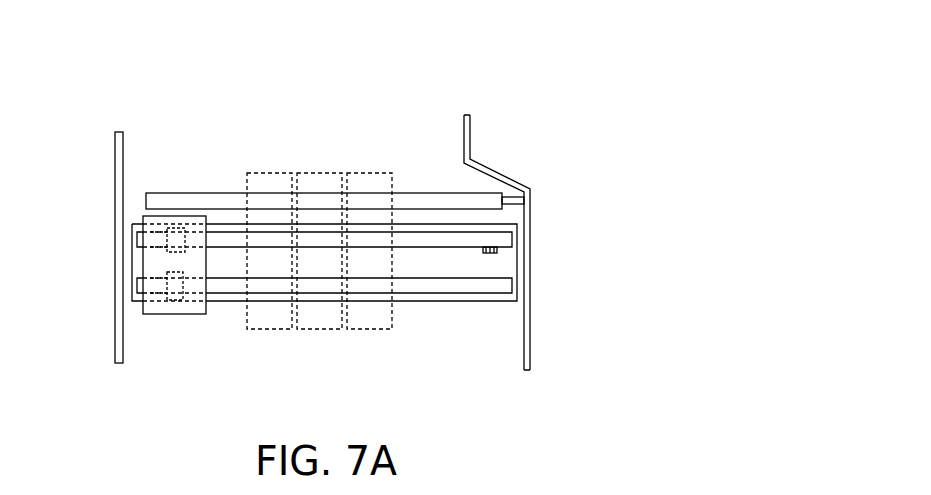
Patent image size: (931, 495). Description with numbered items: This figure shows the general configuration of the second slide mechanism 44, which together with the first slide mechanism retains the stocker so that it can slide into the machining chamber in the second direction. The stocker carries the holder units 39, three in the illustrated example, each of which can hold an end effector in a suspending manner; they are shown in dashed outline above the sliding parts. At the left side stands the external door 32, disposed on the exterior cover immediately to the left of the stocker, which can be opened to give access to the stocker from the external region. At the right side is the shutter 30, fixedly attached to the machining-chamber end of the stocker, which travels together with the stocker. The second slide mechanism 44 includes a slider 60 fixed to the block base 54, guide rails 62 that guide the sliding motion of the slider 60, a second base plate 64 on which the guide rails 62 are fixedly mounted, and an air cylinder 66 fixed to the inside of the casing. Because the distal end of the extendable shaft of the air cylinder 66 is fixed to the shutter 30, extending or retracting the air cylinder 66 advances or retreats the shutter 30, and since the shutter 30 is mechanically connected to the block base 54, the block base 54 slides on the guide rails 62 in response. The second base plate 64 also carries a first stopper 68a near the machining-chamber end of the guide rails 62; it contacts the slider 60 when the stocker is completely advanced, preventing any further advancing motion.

The shutter 30 is at (488, 167).
The external door 32 is at (115, 353).
The holder units 39 is at (367, 173).
The second slide mechanism 44 is at (362, 78).
The block base 54 is at (190, 315).
The slider 60 is at (170, 252).
The guide rails 62 is at (512, 237).
The second base plate 64 is at (452, 301).
The air cylinder 66 is at (189, 193).
The first stopper 68a is at (492, 253).